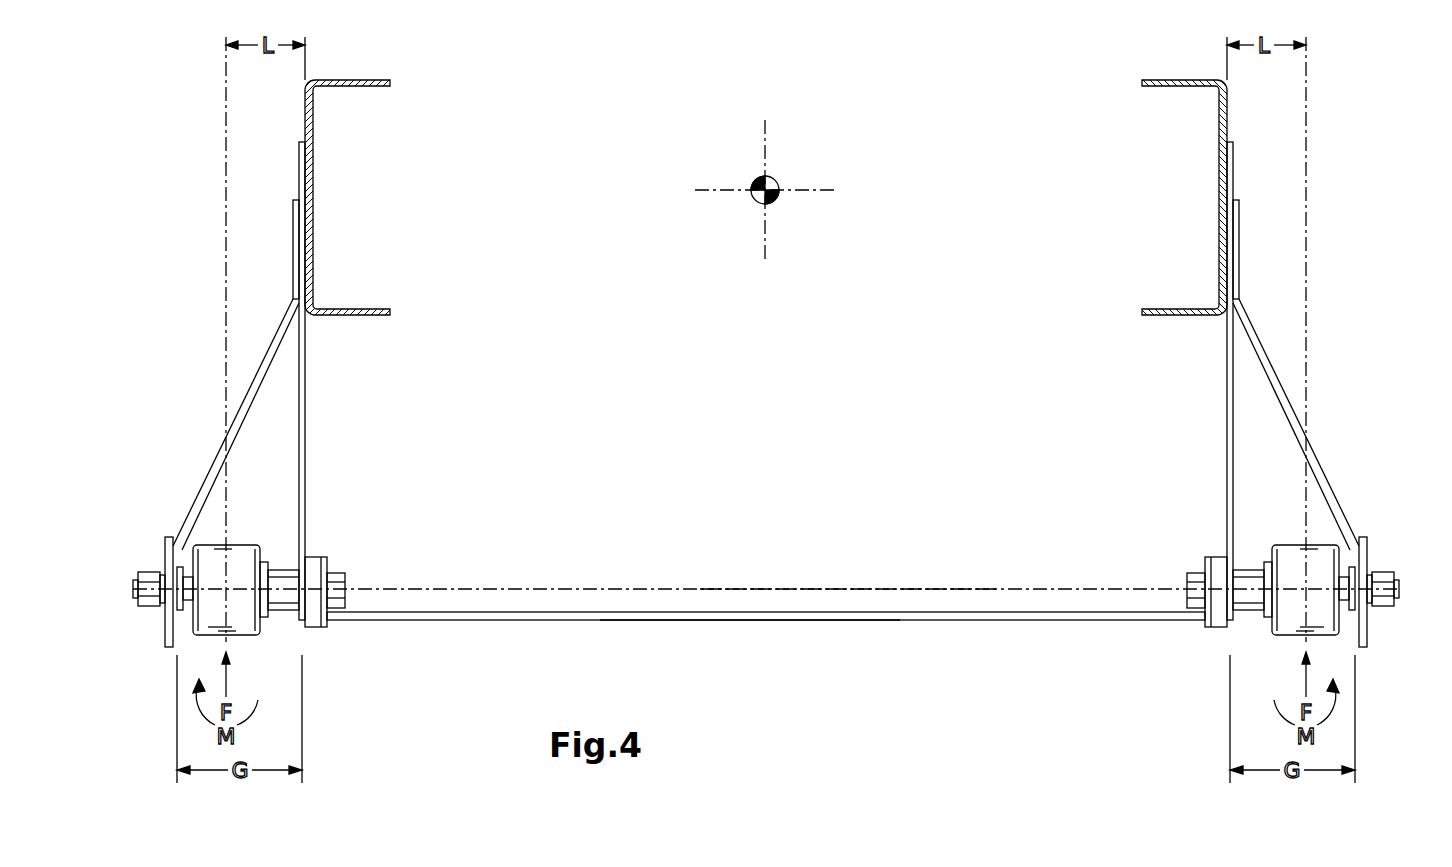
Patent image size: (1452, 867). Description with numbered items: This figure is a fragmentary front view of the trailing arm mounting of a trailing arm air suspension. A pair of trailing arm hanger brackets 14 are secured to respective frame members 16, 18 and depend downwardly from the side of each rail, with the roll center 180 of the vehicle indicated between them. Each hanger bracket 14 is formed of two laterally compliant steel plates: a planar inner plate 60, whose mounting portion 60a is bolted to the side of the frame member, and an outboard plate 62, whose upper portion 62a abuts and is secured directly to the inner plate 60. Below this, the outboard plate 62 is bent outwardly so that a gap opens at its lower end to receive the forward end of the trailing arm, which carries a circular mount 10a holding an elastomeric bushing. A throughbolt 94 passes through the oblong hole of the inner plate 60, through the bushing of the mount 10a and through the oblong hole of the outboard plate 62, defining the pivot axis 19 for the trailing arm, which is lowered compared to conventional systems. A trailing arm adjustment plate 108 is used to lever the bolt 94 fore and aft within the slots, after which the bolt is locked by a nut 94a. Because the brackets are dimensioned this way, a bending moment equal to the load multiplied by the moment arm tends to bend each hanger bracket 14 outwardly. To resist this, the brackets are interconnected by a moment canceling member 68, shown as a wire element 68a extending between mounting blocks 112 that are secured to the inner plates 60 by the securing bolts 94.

The circular mount 10a is at (238, 568).
The trailing arm hanger bracket 14 is at (221, 360).
The frame member 16 is at (1227, 108).
The opposite frame member 18 is at (314, 112).
The pivot axis 19 is at (955, 588).
The inner plate 60 is at (305, 472).
The mounting portion 60a is at (1230, 170).
The outboard plate 62 is at (237, 418).
The upper portion 62a is at (1235, 260).
The moment canceling member 68 is at (667, 598).
The wire element 68a is at (817, 616).
The throughbolt 94 is at (344, 583).
The nut 94a is at (1381, 607).
The trailing arm adjustment plate 108 is at (1368, 545).
The mounting block 112 is at (317, 555).
The roll center 180 is at (790, 168).